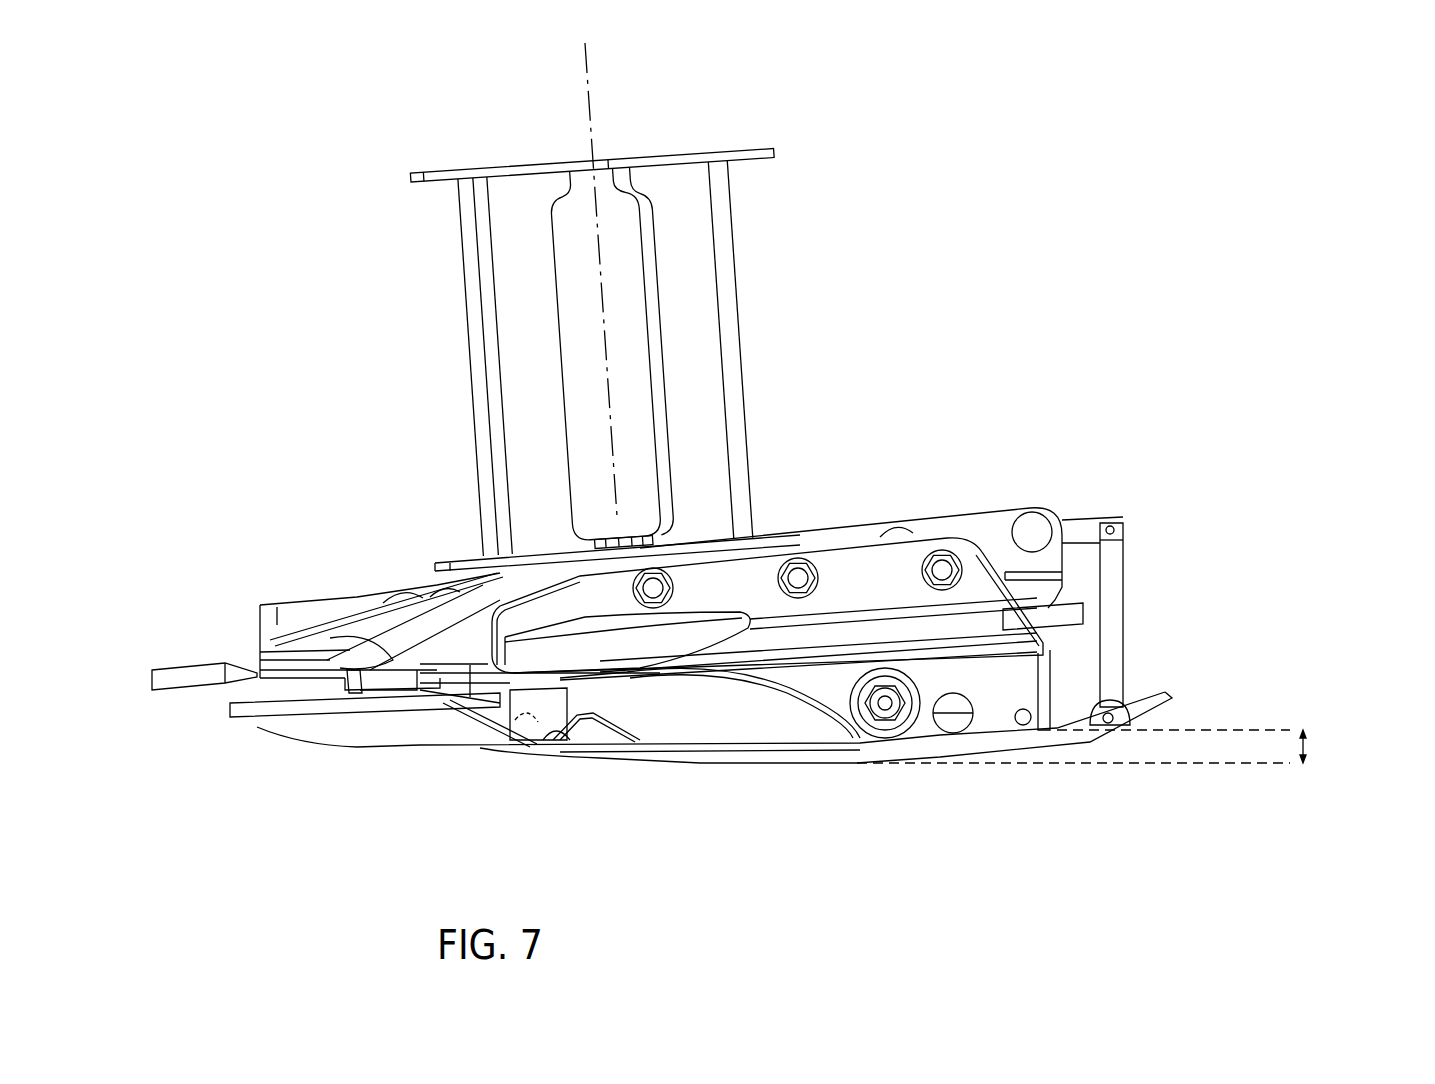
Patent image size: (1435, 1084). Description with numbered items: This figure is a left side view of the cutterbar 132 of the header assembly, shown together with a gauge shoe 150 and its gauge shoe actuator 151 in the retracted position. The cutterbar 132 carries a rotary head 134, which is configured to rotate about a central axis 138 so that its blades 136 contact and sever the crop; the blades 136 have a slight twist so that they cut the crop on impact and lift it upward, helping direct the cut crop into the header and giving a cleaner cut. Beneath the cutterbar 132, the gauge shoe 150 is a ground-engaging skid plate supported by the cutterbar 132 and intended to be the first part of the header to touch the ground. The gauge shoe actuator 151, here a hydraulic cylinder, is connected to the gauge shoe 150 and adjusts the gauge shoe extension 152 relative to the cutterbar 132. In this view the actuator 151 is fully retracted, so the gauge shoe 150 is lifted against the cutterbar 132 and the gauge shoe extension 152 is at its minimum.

The central axis 138 is at (585, 95).
The cutterbar 132 is at (842, 543).
The rotary head 134 is at (920, 543).
The blade 136 is at (188, 677).
The gauge shoe 150 is at (745, 763).
The gauge shoe actuator 151 is at (1127, 605).
The gauge shoe extension 152 is at (1312, 742).